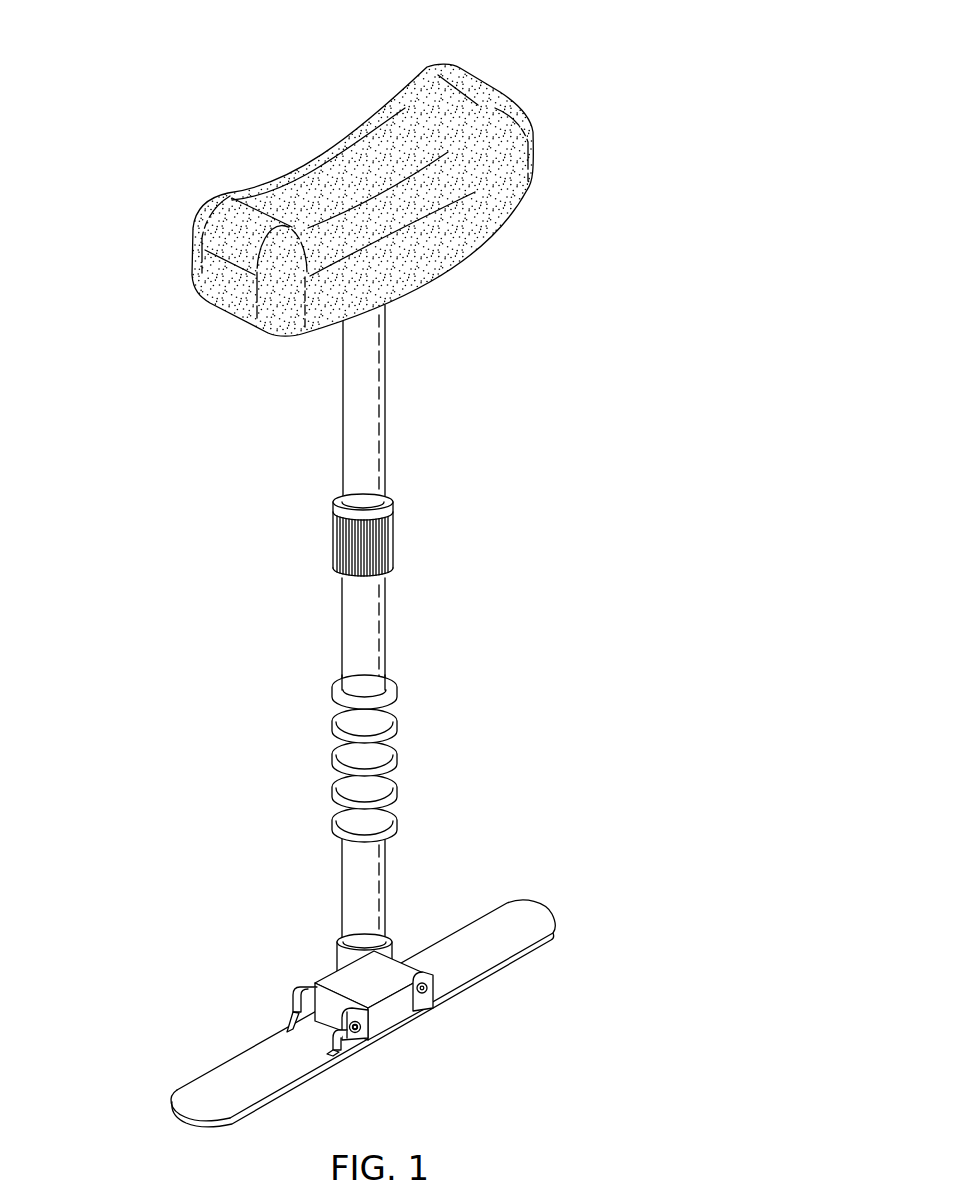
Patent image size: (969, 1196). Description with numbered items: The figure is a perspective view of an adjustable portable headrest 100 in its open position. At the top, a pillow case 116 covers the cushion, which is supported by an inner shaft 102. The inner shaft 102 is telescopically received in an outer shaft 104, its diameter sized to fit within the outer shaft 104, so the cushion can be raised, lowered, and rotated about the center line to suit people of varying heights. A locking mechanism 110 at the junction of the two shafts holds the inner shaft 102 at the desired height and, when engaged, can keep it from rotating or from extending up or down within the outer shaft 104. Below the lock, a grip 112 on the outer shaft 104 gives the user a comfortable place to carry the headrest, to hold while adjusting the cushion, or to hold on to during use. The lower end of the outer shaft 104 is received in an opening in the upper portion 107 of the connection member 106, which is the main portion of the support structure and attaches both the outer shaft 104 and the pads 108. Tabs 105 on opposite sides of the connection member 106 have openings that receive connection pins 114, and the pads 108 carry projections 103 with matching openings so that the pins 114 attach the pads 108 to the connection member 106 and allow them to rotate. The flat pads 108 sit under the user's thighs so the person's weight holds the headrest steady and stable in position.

The adjustable portable headrest 100 is at (172, 77).
The inner shaft 102 is at (387, 409).
The projections 103 is at (300, 992).
The outer shaft 104 is at (387, 630).
The tabs 105 is at (428, 970).
The connection member 106 is at (323, 971).
The upper portion 107 is at (400, 968).
The pads 108 is at (523, 917).
The locking mechanism 110 is at (396, 528).
The grip 112 is at (332, 752).
The connection pins 114 is at (361, 1030).
The pillow case 116 is at (493, 88).